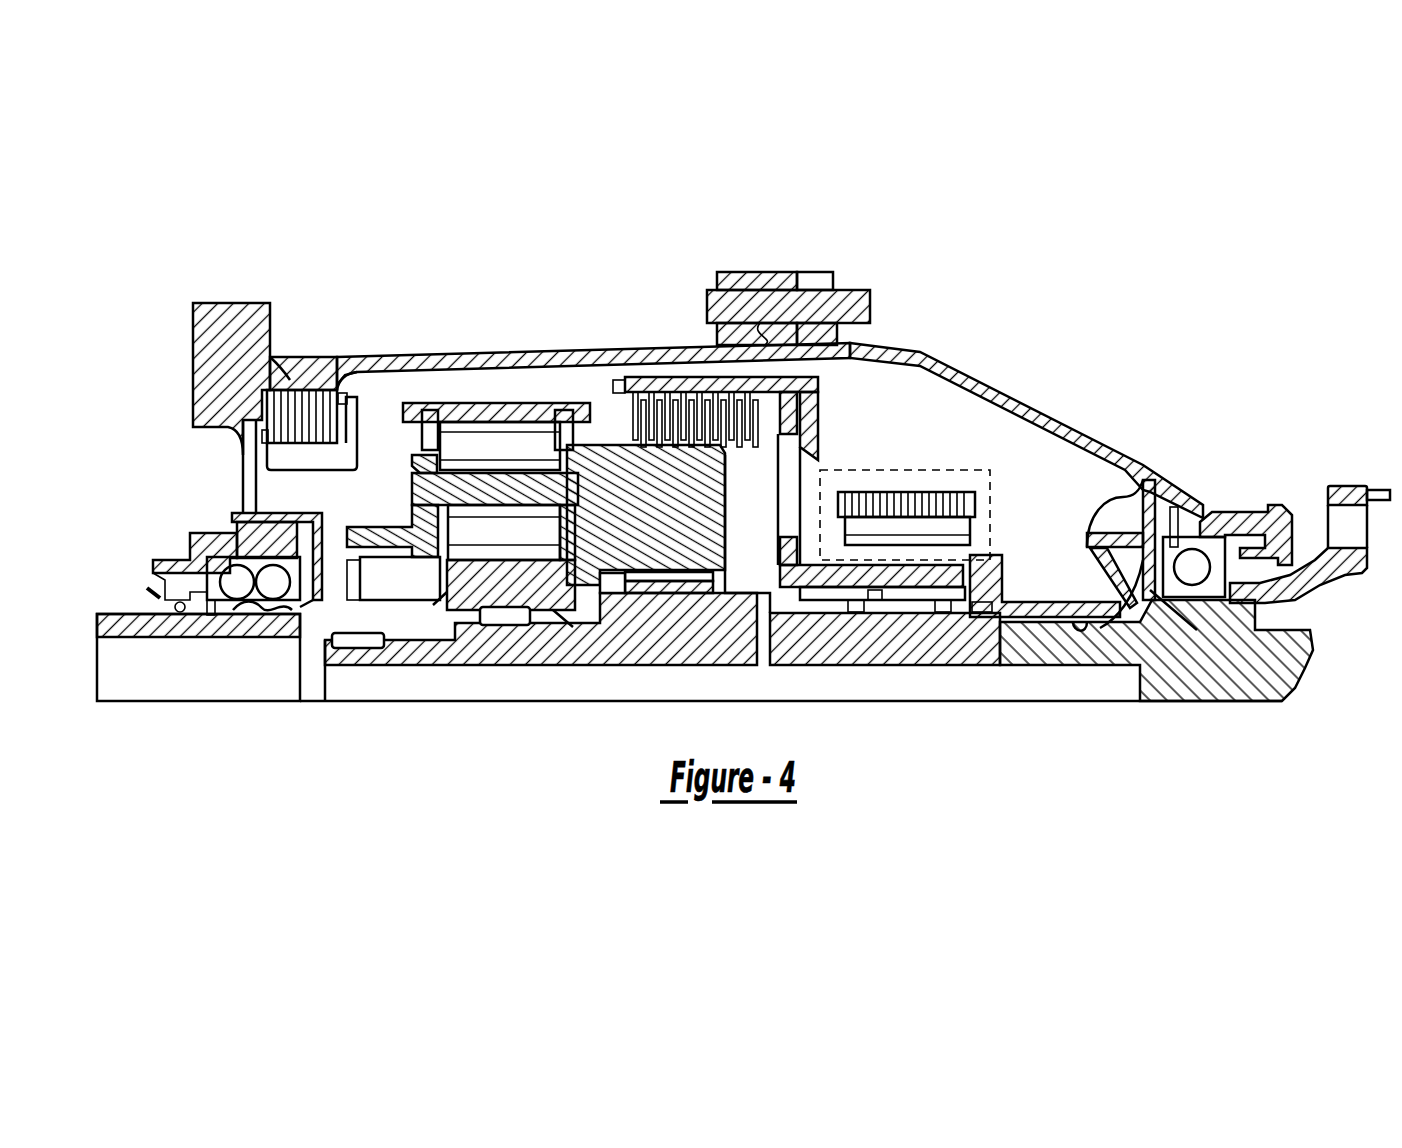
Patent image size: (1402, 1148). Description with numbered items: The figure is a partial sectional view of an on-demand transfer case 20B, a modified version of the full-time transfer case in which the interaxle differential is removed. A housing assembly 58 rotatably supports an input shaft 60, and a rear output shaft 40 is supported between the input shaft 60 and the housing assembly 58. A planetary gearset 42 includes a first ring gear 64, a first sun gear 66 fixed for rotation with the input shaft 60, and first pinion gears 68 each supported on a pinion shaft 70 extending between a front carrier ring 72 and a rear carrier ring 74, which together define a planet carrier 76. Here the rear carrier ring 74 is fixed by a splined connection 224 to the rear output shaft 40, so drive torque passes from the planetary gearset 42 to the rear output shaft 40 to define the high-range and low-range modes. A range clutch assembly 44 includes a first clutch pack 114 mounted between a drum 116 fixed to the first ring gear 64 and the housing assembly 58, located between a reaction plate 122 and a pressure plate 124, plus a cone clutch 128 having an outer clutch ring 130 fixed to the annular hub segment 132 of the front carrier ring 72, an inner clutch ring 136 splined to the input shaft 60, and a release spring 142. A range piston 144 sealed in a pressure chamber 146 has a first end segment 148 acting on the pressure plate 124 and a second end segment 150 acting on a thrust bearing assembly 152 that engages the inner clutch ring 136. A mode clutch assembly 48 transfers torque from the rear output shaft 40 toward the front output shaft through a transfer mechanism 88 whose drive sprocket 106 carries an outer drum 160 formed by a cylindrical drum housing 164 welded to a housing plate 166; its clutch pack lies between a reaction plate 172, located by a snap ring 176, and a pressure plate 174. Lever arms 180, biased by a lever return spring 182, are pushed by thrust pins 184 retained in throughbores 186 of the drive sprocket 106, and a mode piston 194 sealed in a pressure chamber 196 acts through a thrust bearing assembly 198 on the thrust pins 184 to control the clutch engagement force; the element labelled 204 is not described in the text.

The transfer case 20B is at (1027, 370).
The rear output shaft 40 is at (1300, 650).
The planetary gearset 42 is at (505, 352).
The range clutch assembly 44 is at (232, 517).
The mode clutch assembly 48 is at (687, 367).
The housing assembly 58 is at (1088, 432).
The input shaft 60 is at (120, 616).
The first ring gear 64 is at (505, 420).
The first sun gear 66 is at (502, 595).
The first pinion gears 68 is at (472, 445).
The pinion shaft 70 is at (509, 508).
The front carrier ring 72 is at (418, 457).
The rear carrier ring 74 is at (628, 525).
The planet carrier 76 is at (583, 606).
The transfer mechanism 88 is at (1012, 536).
The drive sprocket 106 is at (912, 543).
The first clutch pack 114 is at (288, 384).
The drum 116 is at (322, 473).
The reaction plate 122 is at (342, 387).
The pressure plate 124 is at (283, 378).
The cone clutch 128 is at (296, 493).
The outer clutch ring 130 is at (420, 562).
The annular hub segment 132 is at (377, 533).
The inner clutch ring 136 is at (350, 640).
The release spring 142 is at (443, 592).
The range piston 144 is at (243, 472).
The pressure chamber 146 is at (258, 430).
The first end segment 148 is at (258, 418).
The second end segment 150 is at (258, 600).
The thrust bearing assembly 152 is at (305, 613).
The outer drum 160 is at (750, 368).
The cylindrical drum housing 164 is at (713, 375).
The housing plate 166 is at (813, 412).
The reaction plate 172 is at (633, 403).
The pressure plate 174 is at (767, 417).
The snap ring 176 is at (612, 375).
The lever arms 180 is at (790, 546).
The lever return spring 182 is at (838, 492).
The thrust pins 184 is at (920, 593).
The throughbores 186 is at (890, 577).
The mode piston 194 is at (1152, 545).
The pressure chamber 196 is at (1192, 520).
The thrust bearing assembly 198 is at (977, 593).
The passage 204 is at (1080, 628).
The splined connection 224 is at (658, 572).